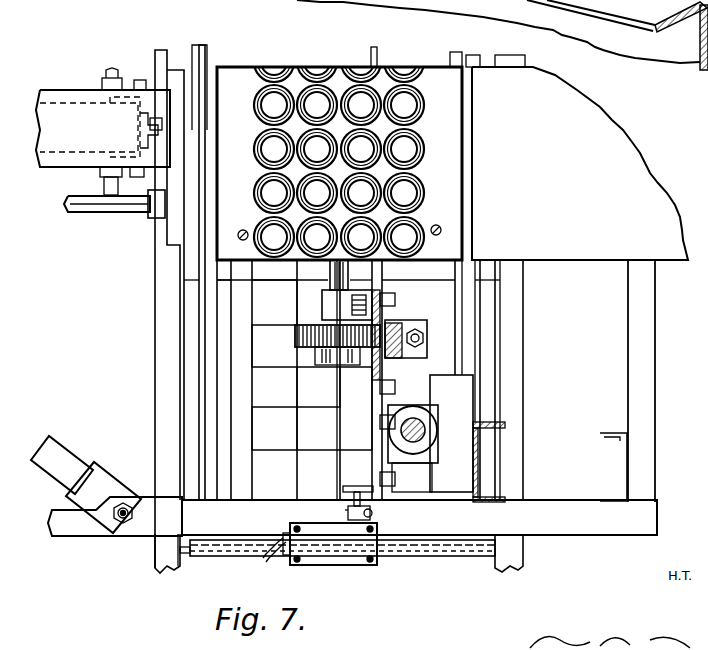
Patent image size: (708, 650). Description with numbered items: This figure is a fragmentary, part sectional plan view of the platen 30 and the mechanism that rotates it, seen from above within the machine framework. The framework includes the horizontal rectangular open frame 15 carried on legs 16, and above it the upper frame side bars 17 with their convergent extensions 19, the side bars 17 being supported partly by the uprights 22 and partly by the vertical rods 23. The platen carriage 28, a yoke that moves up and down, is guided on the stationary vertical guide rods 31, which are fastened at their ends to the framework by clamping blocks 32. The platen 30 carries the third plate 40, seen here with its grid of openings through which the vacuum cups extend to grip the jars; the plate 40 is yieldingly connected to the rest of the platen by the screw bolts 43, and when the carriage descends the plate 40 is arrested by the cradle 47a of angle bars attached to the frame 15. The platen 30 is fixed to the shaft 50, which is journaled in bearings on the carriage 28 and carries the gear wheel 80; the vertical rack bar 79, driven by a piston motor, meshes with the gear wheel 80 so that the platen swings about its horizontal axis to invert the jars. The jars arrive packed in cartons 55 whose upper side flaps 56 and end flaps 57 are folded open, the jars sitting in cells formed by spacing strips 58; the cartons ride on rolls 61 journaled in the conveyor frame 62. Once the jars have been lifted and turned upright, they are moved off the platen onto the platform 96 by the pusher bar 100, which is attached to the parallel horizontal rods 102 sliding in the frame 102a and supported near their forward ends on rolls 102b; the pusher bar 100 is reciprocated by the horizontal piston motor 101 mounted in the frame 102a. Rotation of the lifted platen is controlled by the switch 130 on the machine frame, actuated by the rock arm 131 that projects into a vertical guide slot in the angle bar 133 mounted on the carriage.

The horizontal rectangular open frame 15 is at (648, 371).
The legs 16 is at (616, 438).
The side bars 17 is at (488, 517).
The convergent extensions 19 is at (65, 460).
The uprights 22 is at (478, 466).
The vertical rods 23 is at (124, 508).
The platen carriage 28 is at (402, 314).
The platen 30 is at (276, 62).
The vertical guide rods 31 is at (426, 433).
The clamping blocks 32 is at (437, 378).
The third plate 40 is at (364, 151).
The screw bolts 43 is at (442, 230).
The cradle 47a is at (212, 53).
The shaft 50 is at (330, 273).
The cartons 55 is at (328, 396).
The upper side flaps 56 is at (238, 305).
The end flaps 57 is at (410, 272).
The spacing strips 58 is at (324, 452).
The rolls 61 is at (433, 548).
The conveyor frame 62 is at (172, 560).
The vertical rack bar 79 is at (400, 326).
The gear wheel 80 is at (297, 336).
The platform 96 is at (612, 140).
The pusher bar 100 is at (180, 230).
The piston motor 101 is at (70, 118).
The horizontal rods 102 is at (82, 207).
The frame 102a is at (45, 96).
The rolls 102b is at (113, 218).
The switch 130 is at (320, 535).
The rock arm 131 is at (382, 511).
The angle bar 133 is at (348, 486).